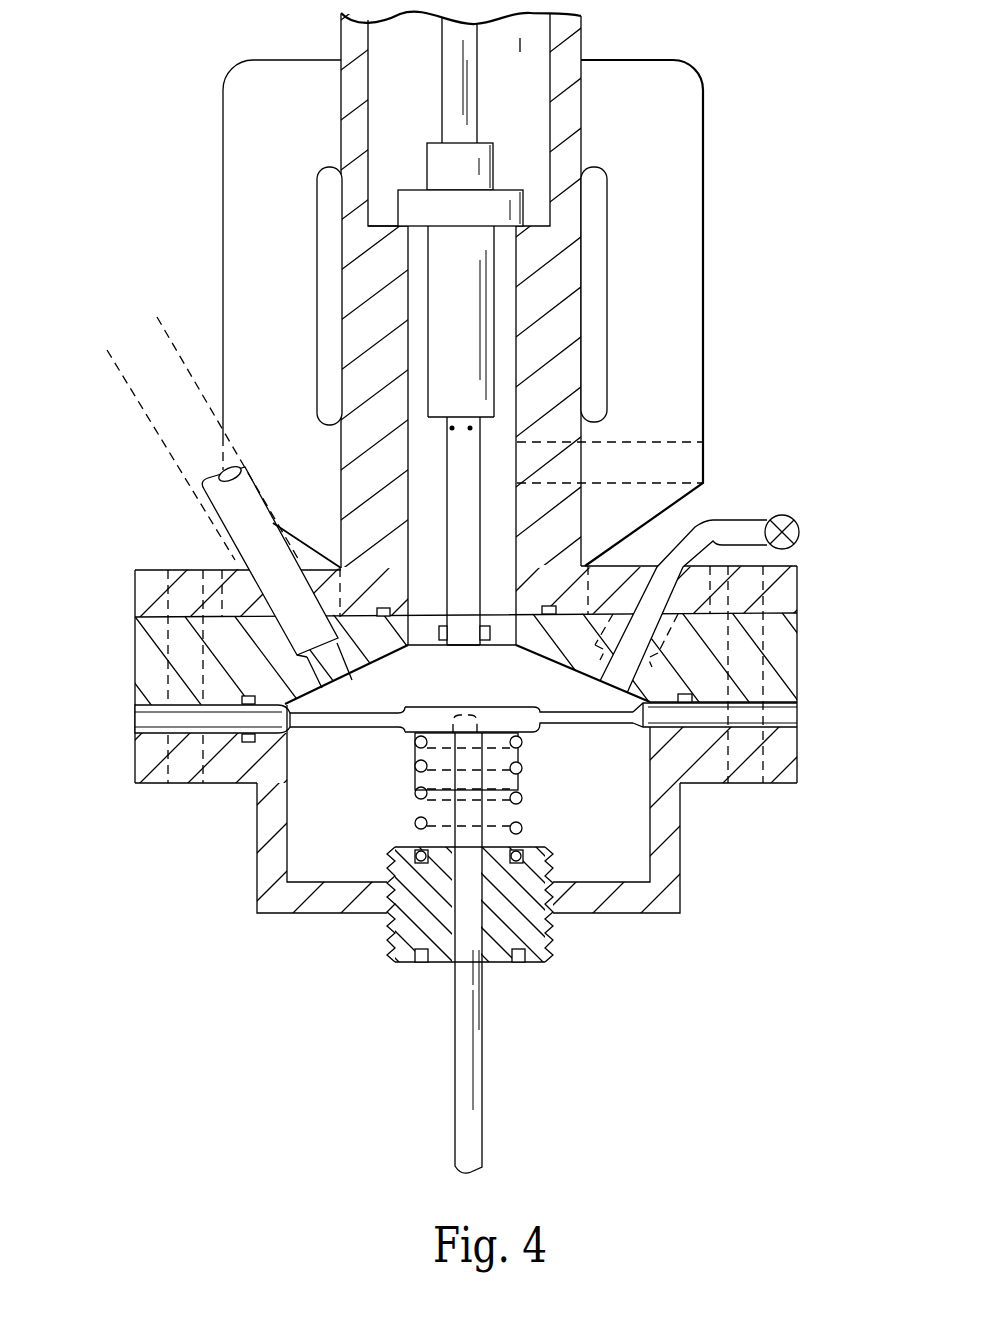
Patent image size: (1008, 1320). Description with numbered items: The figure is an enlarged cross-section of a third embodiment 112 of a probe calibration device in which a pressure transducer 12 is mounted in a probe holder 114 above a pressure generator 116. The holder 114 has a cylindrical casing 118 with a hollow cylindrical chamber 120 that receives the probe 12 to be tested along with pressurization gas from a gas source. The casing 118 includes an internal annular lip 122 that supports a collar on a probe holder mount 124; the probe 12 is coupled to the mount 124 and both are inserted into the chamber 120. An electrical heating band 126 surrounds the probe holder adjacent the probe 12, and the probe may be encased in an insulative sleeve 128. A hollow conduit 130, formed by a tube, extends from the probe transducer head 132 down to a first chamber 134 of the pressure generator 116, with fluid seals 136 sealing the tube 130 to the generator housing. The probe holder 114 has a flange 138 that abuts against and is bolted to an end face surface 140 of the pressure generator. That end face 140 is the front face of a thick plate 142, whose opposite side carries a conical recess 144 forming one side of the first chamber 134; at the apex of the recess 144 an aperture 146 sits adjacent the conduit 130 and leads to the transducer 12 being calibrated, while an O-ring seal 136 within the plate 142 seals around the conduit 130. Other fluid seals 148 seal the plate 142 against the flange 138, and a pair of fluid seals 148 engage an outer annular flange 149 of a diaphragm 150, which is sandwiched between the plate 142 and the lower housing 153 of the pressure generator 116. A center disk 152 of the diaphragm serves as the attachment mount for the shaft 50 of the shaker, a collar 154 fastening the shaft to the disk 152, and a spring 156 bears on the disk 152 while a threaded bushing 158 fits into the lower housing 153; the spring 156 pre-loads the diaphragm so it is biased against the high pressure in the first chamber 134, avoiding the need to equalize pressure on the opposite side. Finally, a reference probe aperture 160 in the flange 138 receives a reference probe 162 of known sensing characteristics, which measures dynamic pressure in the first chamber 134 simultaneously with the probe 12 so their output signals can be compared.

The pressure transducer 12 is at (474, 282).
The shaft 50 is at (476, 1090).
The third embodiment 112 is at (715, 300).
The probe holder 114 is at (545, 284).
The pressure generator 116 is at (683, 828).
The cylindrical casing 118 is at (565, 105).
The hollow cylindrical chamber 120 is at (520, 45).
The internal annular lip 122 is at (376, 245).
The probe holder mount 124 is at (410, 198).
The electrical heating band 126 is at (330, 332).
The insulative sleeve 128 is at (703, 138).
The hollow conduit 130 is at (463, 513).
The probe transducer head 132 is at (470, 402).
The first chamber 134 is at (558, 690).
The fluid seals 136 is at (495, 627).
The flange 138 is at (788, 590).
The end face surface 140 is at (790, 614).
The thick plate 142 is at (150, 660).
The conical recess 144 is at (372, 667).
The aperture 146 is at (463, 648).
The fluid seals 148 is at (383, 608).
The outer annular flange 149 is at (230, 723).
The diaphragm 150 is at (573, 723).
The center disk 152 is at (412, 716).
The lower housing 153 is at (278, 916).
The collar 154 is at (525, 768).
The spring 156 is at (416, 820).
The threaded bushing 158 is at (536, 920).
The reference probe aperture 160 is at (243, 592).
The reference probe 162 is at (268, 545).